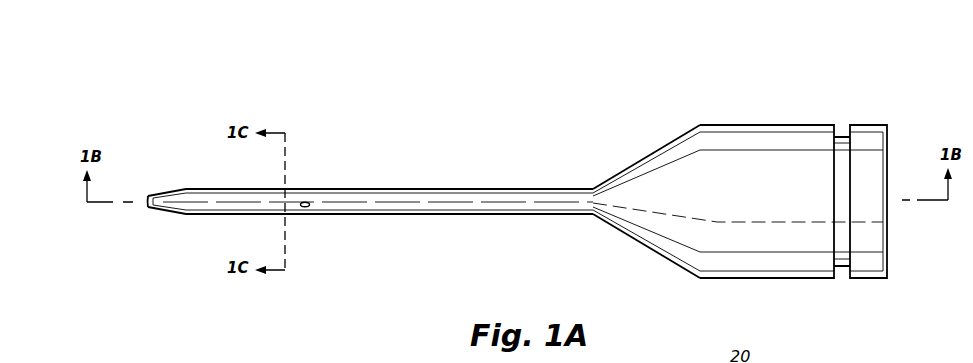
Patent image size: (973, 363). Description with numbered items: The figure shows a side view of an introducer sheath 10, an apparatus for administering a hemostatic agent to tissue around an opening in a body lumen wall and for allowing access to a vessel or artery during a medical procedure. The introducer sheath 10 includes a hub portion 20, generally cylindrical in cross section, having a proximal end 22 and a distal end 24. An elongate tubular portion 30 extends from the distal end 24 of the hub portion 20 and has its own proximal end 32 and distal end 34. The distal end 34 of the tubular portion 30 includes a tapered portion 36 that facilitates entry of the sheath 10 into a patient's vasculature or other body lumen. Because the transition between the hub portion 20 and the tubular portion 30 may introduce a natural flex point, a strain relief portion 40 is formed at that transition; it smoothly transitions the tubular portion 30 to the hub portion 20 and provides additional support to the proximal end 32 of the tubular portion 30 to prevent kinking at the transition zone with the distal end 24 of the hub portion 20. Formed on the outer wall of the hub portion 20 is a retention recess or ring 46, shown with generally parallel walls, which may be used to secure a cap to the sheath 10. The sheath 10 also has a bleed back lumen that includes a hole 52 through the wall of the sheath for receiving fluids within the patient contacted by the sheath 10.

The introducer sheath 10 is at (469, 128).
The hub portion 20 is at (593, 183).
The proximal end 22 is at (868, 280).
The distal end 24 is at (604, 220).
The tubular portion 30 is at (593, 228).
The proximal end 32 is at (591, 188).
The distal end 34 is at (165, 214).
The tapered portion 36 is at (188, 188).
The strain relief portion 40 is at (592, 201).
The retention recess or ring 46 is at (842, 280).
The hole 52 is at (306, 202).